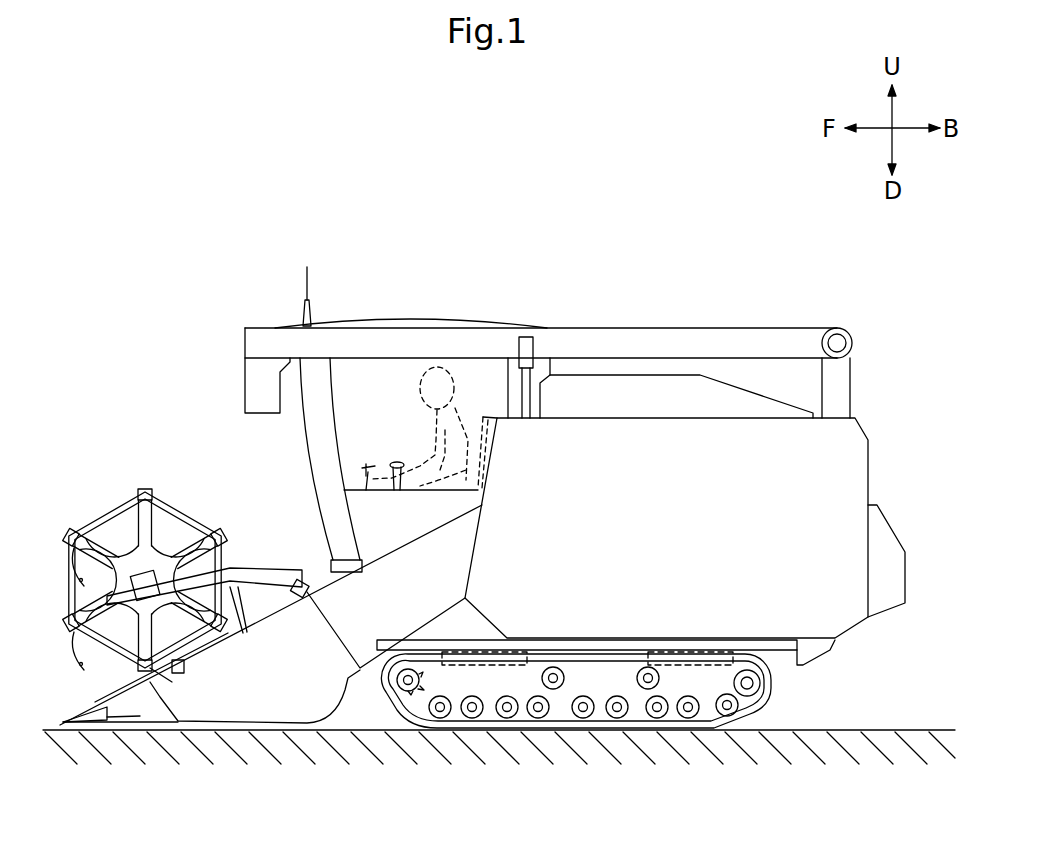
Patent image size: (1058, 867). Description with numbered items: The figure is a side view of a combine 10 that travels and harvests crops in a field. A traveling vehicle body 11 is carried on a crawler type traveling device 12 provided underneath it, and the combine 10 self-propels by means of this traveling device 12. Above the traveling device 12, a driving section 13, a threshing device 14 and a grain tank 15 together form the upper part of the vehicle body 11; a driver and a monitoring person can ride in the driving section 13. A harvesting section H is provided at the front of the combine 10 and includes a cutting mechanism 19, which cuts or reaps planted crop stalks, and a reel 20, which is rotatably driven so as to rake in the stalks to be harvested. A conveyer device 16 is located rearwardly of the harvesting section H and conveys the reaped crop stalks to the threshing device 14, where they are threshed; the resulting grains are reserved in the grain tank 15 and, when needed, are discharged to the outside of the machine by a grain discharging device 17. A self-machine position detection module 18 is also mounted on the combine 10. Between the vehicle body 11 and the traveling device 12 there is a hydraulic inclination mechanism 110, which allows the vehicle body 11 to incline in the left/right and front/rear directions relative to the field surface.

The combine 10 is at (530, 267).
The traveling vehicle body 11 is at (858, 643).
The crawler type traveling device 12 is at (750, 705).
The driving section 13 is at (350, 410).
The threshing device 14 is at (847, 465).
The grain tank 15 is at (640, 387).
The conveyer device 16 is at (338, 597).
The grain discharging device 17 is at (733, 338).
The self-machine position detection module 18 is at (308, 285).
The cutting mechanism 19 is at (148, 733).
The reel 20 is at (92, 520).
The hydraulic inclination mechanism 110 is at (697, 640).
The harvesting section H is at (152, 485).